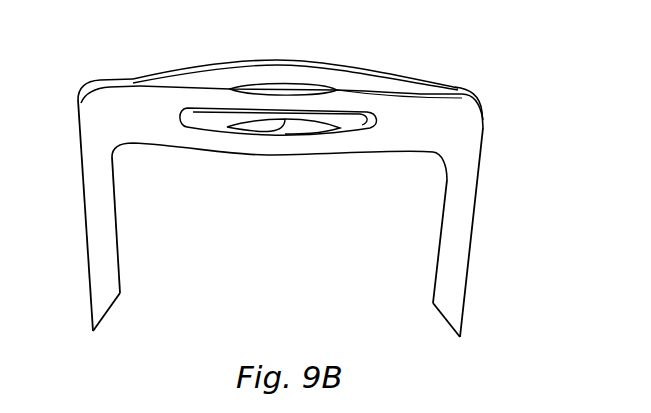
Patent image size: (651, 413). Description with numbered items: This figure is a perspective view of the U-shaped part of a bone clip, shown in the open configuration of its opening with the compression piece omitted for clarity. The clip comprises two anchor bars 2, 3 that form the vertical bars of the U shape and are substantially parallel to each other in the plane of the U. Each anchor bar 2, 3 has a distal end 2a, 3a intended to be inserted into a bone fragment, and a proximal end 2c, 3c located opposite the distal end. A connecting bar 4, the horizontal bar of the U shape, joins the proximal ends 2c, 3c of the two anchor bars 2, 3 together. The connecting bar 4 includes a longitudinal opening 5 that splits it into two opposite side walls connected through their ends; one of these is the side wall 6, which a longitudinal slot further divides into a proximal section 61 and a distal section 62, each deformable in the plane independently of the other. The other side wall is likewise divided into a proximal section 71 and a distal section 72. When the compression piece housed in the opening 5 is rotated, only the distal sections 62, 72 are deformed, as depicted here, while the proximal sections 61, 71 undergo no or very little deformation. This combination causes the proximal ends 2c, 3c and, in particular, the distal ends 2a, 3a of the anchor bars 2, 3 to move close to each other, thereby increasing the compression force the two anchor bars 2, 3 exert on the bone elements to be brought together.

The anchor bar 2 is at (71, 231).
The distal end 2a is at (124, 320).
The proximal end 2c is at (72, 77).
The anchor bar 3 is at (486, 252).
The distal end 3a is at (433, 325).
The proximal end 3c is at (482, 81).
The connecting bar 4 is at (186, 50).
The longitudinal opening 5 is at (288, 124).
The side wall 6 is at (4, 117).
The proximal section 61 is at (267, 62).
The distal section 62 is at (355, 121).
The proximal section 71 is at (320, 107).
The distal section 72 is at (237, 142).